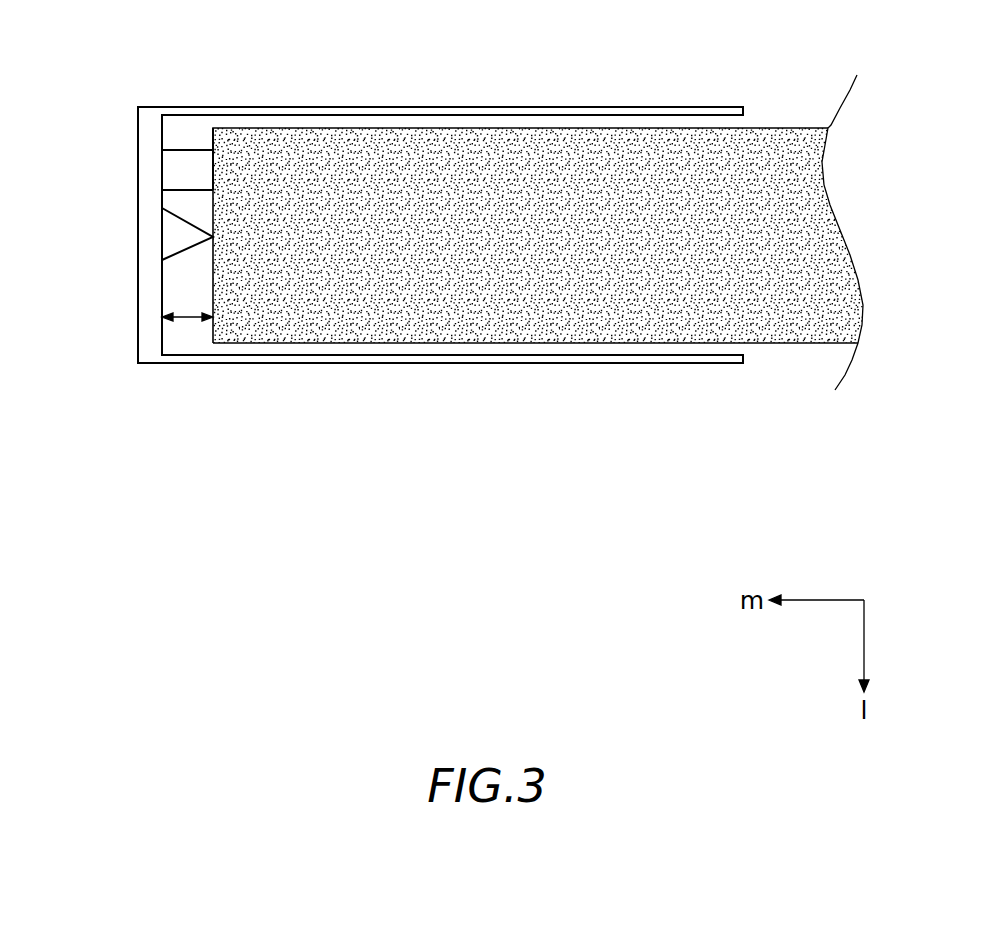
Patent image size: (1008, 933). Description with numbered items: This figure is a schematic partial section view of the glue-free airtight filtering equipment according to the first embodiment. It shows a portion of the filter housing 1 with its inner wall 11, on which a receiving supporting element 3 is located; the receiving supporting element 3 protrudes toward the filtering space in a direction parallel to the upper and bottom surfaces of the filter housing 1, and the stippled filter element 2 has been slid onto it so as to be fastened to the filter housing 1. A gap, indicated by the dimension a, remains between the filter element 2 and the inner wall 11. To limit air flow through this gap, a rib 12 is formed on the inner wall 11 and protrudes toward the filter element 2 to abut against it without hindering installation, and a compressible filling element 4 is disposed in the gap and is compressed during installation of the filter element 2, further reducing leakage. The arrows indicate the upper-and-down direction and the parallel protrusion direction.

The filter housing 1 is at (440, 235).
The filter element 2 is at (782, 140).
The receiving supporting element 3 is at (478, 358).
The compressible filling element 4 is at (193, 160).
The inner wall 11 is at (152, 154).
The rib 12 is at (190, 234).
The gap distance a is at (187, 320).